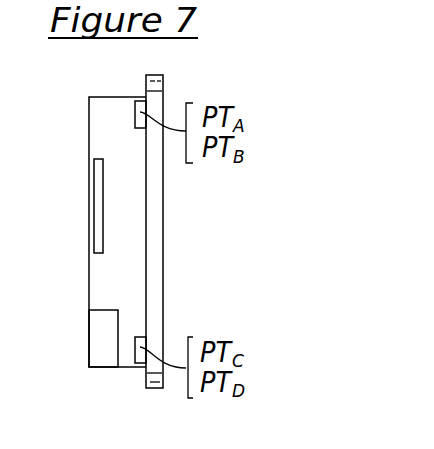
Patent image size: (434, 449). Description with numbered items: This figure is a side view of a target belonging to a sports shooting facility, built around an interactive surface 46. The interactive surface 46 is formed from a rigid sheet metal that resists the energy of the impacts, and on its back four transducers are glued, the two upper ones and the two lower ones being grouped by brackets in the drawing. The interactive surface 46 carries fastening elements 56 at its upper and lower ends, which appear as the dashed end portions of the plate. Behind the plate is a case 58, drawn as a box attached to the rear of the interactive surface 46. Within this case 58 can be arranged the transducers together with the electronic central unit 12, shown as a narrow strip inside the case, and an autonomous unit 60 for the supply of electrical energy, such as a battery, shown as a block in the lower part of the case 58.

The electronic central unit 12 is at (94, 190).
The interactive surface 46 is at (163, 220).
The fastening elements 56 is at (146, 85).
The case 58 is at (89, 287).
The autonomous unit 60 is at (100, 337).